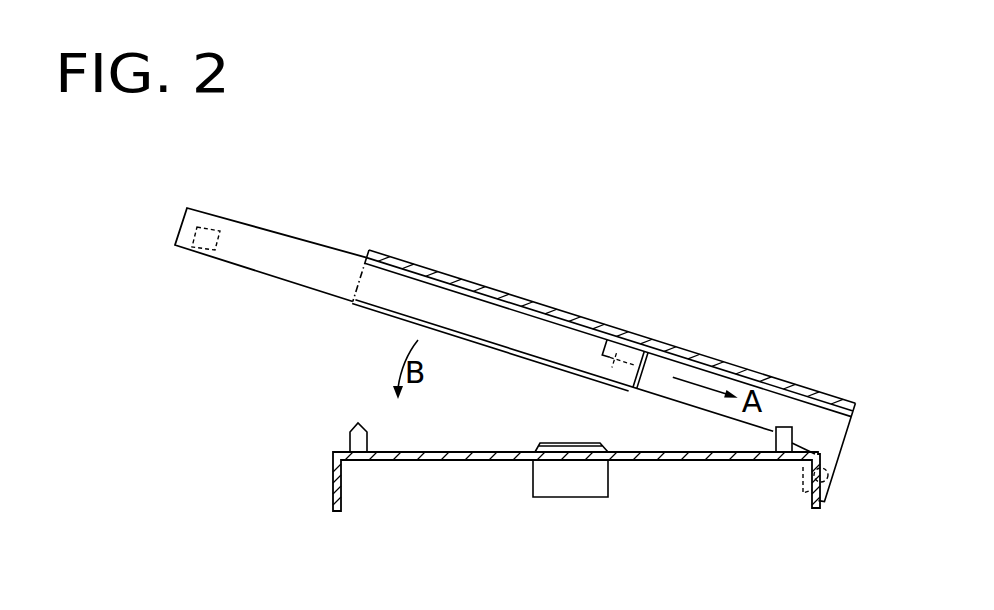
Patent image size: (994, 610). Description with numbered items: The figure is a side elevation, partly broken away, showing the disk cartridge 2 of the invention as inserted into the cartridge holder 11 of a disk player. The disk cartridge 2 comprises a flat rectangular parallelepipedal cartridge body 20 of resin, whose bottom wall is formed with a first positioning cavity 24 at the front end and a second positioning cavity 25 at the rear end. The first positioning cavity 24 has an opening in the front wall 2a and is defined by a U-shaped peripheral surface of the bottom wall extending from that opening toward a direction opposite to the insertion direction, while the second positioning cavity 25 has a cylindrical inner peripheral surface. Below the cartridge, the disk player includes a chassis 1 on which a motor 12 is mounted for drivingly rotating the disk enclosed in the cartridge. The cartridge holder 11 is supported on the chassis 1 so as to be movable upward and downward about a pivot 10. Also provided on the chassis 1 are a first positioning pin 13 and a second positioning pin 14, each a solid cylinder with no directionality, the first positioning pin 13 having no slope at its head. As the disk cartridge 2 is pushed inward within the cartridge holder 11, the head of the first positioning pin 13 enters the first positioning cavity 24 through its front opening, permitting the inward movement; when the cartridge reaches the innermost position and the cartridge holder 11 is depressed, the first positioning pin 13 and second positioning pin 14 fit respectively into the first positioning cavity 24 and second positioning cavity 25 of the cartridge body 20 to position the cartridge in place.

The chassis 1 is at (438, 453).
The disk cartridge 2 is at (318, 248).
The front wall 2a is at (597, 376).
The pivot 10 is at (832, 494).
The cartridge holder 11 is at (611, 330).
The motor 12 is at (597, 487).
The first positioning pin 13 is at (775, 443).
The second positioning pin 14 is at (352, 440).
The cartridge body 20 is at (245, 232).
The first positioning cavity 24 is at (655, 368).
The second positioning cavity 25 is at (200, 250).